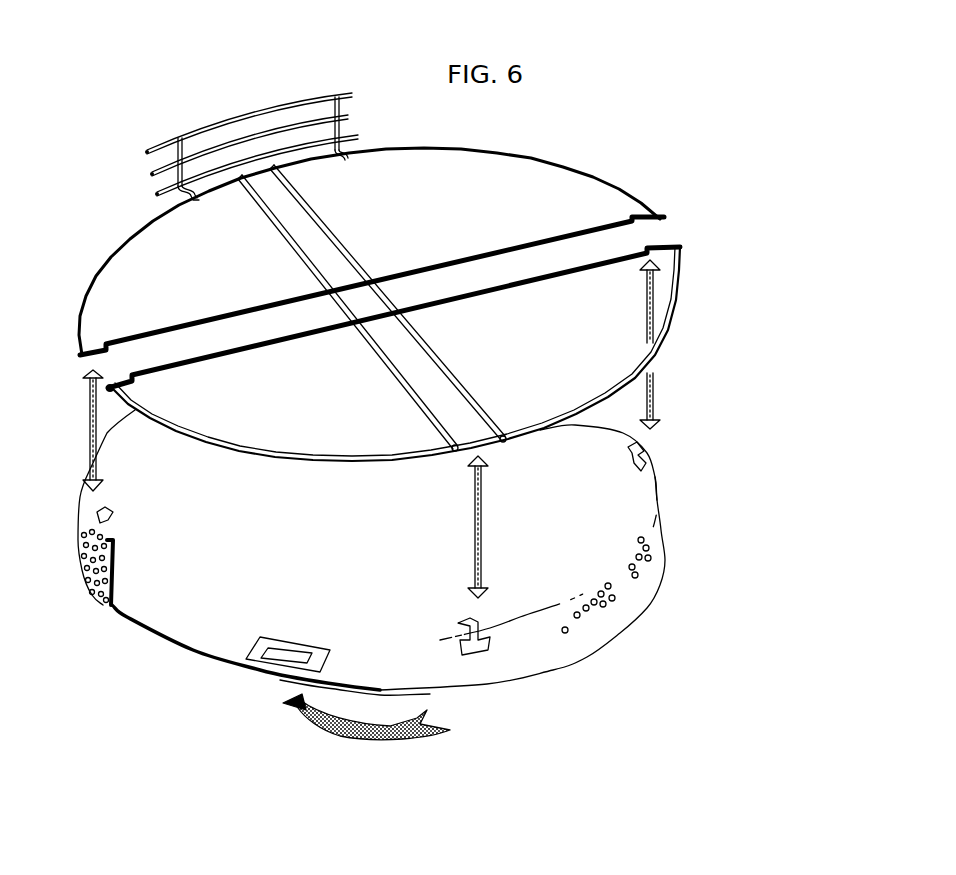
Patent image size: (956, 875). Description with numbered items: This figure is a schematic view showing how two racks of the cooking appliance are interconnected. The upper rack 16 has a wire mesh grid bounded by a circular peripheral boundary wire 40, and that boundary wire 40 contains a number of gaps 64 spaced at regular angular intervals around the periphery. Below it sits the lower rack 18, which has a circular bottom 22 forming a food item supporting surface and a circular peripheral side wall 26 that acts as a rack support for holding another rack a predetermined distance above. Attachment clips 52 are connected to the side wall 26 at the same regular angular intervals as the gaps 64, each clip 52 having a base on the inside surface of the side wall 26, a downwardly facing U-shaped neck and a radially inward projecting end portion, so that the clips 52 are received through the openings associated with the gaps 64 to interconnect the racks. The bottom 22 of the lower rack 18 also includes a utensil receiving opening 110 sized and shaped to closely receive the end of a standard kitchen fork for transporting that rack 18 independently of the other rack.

The rack 16 is at (263, 107).
The peripheral boundary wire 40 is at (573, 163).
The gap 64 is at (673, 233).
The attachment clip 52 is at (650, 445).
The lower rack 18 is at (657, 513).
The peripheral side wall 26 is at (436, 564).
The bottom 22 is at (198, 642).
The utensil receiving opening 110 is at (292, 657).